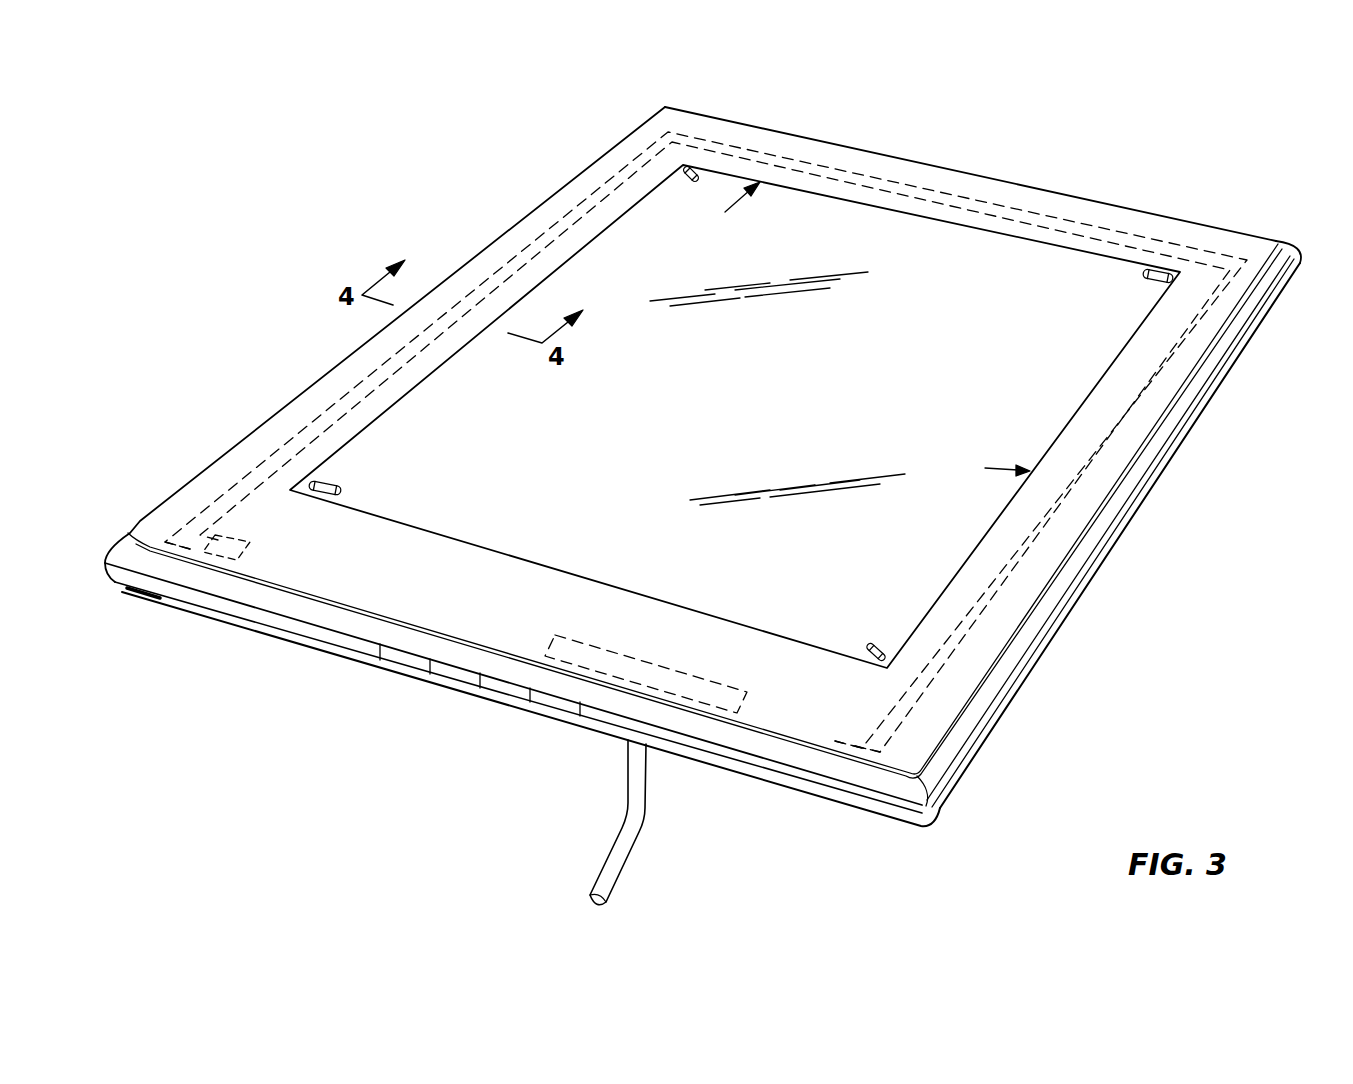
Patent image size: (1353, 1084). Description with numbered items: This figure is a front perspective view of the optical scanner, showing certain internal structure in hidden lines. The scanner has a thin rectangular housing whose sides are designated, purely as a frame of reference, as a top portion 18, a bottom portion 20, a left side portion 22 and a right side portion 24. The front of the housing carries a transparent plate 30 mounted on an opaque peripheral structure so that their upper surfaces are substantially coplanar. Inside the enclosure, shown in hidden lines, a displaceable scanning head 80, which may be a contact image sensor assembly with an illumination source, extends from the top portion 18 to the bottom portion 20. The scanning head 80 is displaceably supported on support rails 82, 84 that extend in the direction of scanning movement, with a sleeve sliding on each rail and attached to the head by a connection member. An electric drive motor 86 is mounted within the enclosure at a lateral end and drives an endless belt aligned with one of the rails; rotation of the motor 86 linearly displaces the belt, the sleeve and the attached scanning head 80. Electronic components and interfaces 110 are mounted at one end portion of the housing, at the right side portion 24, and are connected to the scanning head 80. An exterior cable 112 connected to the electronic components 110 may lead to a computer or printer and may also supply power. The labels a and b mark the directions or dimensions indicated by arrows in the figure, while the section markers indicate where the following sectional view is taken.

The top portion 18 is at (1210, 382).
The bottom portion 20 is at (318, 397).
The left side portion 22 is at (1092, 204).
The right side portion 24 is at (335, 617).
The transparent plate 30 is at (367, 460).
The displaceable scanning head 80 is at (995, 206).
The support rail 82 is at (214, 511).
The support rail 84 is at (970, 714).
The electric drive motor 86 is at (210, 565).
The electronic components and interfaces 110 is at (578, 672).
The exterior cable 112 is at (623, 815).
The dimension a is at (1152, 509).
The dimension b is at (822, 132).